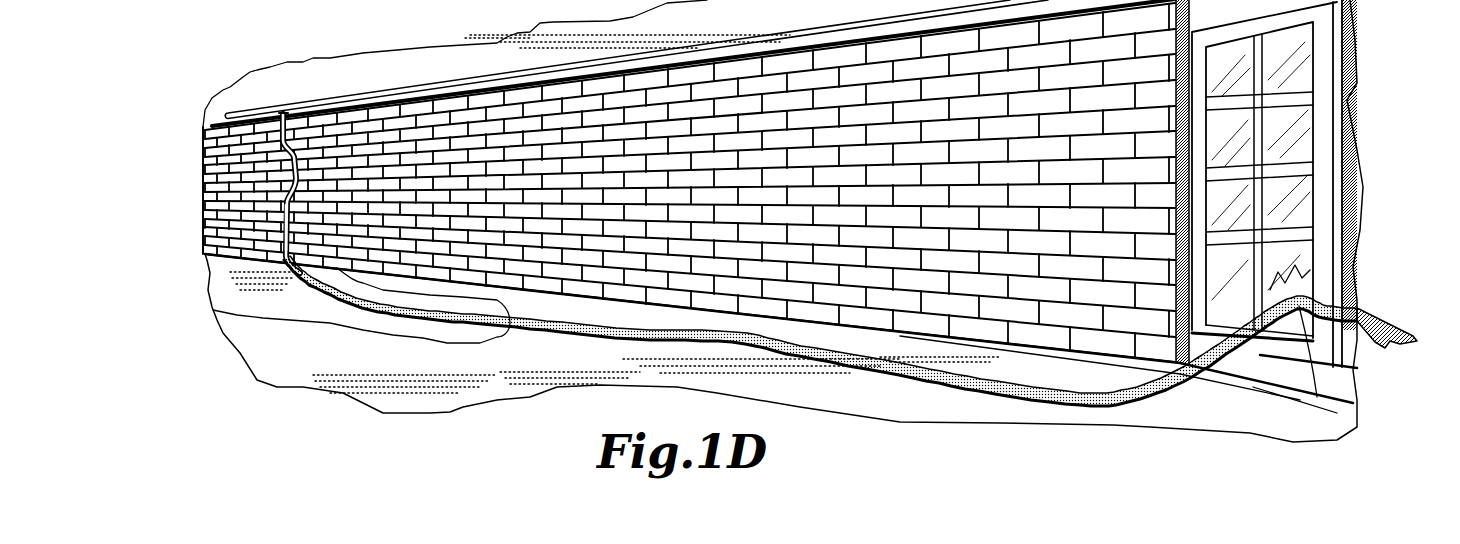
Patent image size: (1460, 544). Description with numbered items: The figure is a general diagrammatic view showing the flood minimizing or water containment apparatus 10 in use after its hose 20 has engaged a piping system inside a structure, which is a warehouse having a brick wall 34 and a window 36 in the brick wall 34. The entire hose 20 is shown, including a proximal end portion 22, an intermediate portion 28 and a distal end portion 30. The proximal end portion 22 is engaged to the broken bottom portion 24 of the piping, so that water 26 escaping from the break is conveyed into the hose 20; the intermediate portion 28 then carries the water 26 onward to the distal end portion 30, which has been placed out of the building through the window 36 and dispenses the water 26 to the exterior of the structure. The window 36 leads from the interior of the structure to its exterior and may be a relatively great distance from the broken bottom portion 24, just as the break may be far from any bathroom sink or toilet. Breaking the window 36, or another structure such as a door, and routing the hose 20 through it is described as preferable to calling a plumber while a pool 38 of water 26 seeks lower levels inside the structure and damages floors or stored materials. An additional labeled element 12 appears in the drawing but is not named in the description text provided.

The water containment apparatus 10 is at (775, 241).
The building structure / eave 12 is at (207, 128).
The hose 20 is at (1005, 402).
The proximal end portion 22 is at (228, 158).
The broken bottom portion 24 is at (292, 140).
The water 26 is at (423, 338).
The intermediate portion 28 is at (277, 203).
The distal end portion 30 is at (1335, 303).
The brick wall 34 is at (1342, 385).
The window 36 is at (1343, 132).
The pool 38 is at (393, 338).